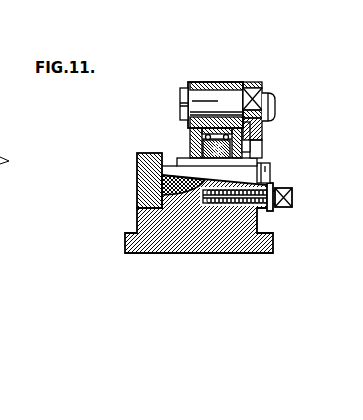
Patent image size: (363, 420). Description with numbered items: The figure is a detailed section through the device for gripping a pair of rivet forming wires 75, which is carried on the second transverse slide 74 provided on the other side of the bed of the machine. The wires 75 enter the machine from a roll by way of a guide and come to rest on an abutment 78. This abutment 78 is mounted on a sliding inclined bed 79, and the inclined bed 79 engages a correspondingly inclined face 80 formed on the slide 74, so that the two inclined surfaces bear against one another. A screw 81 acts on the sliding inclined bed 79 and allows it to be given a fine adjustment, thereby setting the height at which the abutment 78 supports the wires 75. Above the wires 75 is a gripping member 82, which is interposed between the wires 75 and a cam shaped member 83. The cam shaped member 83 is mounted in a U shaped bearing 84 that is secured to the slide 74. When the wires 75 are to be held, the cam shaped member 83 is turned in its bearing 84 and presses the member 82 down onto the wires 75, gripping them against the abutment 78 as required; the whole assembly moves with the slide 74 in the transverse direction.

The second transverse slide 74 is at (160, 220).
The rivet forming wires 75 is at (256, 138).
The abutment 78 is at (243, 154).
The sliding inclined bed 79 is at (270, 173).
The inclined face 80 is at (162, 192).
The screw 81 is at (293, 198).
The gripping member 82 is at (190, 129).
The cam shaped member 83 is at (220, 101).
The U shaped bearing 84 is at (208, 82).